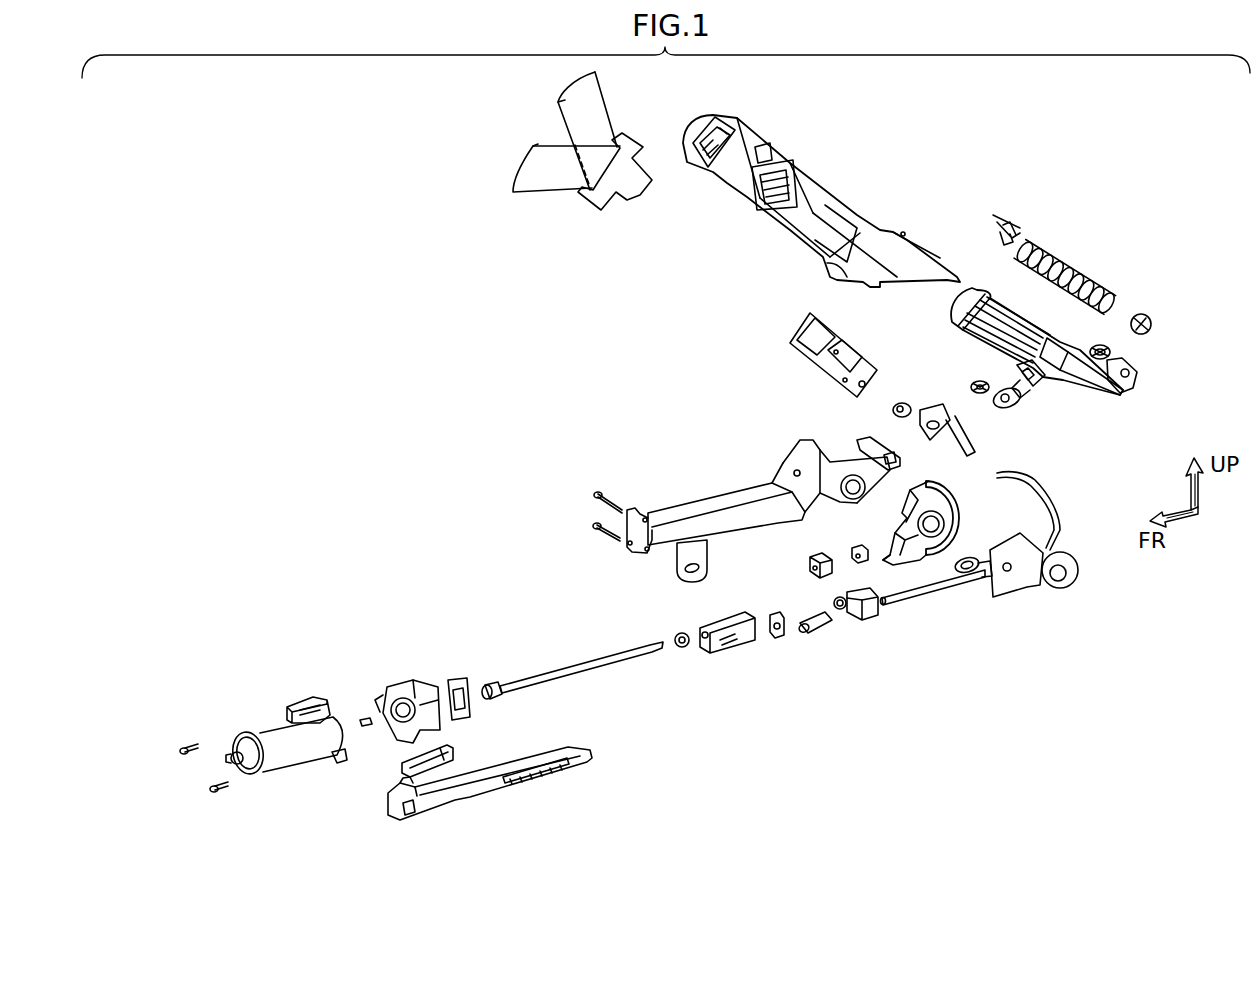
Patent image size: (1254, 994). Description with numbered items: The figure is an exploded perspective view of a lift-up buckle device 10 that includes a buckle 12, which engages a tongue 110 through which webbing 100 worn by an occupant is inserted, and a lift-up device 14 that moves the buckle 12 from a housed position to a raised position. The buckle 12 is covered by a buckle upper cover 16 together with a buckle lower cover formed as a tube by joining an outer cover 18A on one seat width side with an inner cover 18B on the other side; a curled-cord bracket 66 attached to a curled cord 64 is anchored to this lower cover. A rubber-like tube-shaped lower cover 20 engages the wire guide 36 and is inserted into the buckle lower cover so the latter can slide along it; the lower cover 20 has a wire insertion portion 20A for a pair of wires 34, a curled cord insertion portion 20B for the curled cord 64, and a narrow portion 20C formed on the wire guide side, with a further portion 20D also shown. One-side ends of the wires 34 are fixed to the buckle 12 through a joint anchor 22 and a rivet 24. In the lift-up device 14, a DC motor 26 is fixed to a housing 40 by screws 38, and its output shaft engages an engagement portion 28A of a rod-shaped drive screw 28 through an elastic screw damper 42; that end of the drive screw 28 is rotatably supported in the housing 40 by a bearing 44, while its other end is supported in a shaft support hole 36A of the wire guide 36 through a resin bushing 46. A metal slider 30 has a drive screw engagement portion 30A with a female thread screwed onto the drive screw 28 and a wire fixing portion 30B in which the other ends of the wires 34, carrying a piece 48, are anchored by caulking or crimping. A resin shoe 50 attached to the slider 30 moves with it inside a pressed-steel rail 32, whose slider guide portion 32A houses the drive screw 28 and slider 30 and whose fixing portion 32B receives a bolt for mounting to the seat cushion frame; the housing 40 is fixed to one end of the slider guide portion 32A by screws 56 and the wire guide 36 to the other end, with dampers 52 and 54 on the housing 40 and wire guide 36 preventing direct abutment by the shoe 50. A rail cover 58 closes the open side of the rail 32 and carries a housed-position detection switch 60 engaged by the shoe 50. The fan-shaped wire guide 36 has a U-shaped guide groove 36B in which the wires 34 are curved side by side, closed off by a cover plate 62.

The lift-up buckle device 10 is at (377, 333).
The buckle 12 is at (795, 346).
The lift-up device 14 is at (868, 742).
The buckle upper cover 16 is at (747, 123).
The outer cover 18A is at (893, 225).
The inner cover 18B is at (800, 197).
The lower cover 20 is at (1142, 385).
The wire insertion portion 20A is at (968, 318).
The curled cord insertion portion 20B is at (975, 295).
The narrow portion 20C is at (1040, 378).
The bracket portion 20D is at (1063, 362).
The joint anchor 22 is at (950, 420).
The rivet 24 is at (905, 404).
The motor 26 is at (295, 770).
The drive screw 28 is at (557, 667).
The engagement portion 28A is at (497, 683).
The slider 30 is at (868, 617).
The drive screw engagement portion 30A is at (840, 600).
The wire fixing portion 30B is at (885, 607).
The rail 32 is at (697, 494).
The slider guide portion 32A is at (750, 496).
The fixing portion 32B is at (672, 562).
The wires 34 is at (1035, 478).
The wire guide 36 is at (962, 528).
The shaft support hole 36A is at (890, 558).
The guide groove 36B is at (953, 490).
The screws 38 is at (210, 788).
The housing 40 is at (408, 682).
The screw damper 42 is at (365, 720).
The bearing 44 is at (688, 648).
The bushing 46 is at (852, 552).
The piece 48 is at (817, 635).
The shoe 50 is at (748, 650).
The damper 52 is at (457, 678).
The damper 54 is at (808, 563).
The screws 56 is at (597, 525).
The rail cover 58 is at (492, 790).
The housed-position detection switch 60 is at (440, 750).
The cover plate 62 is at (1017, 580).
The curled cord 64 is at (1075, 272).
The curled-cord bracket 66 is at (1015, 225).
The webbing 100 is at (547, 198).
The tongue 110 is at (627, 208).